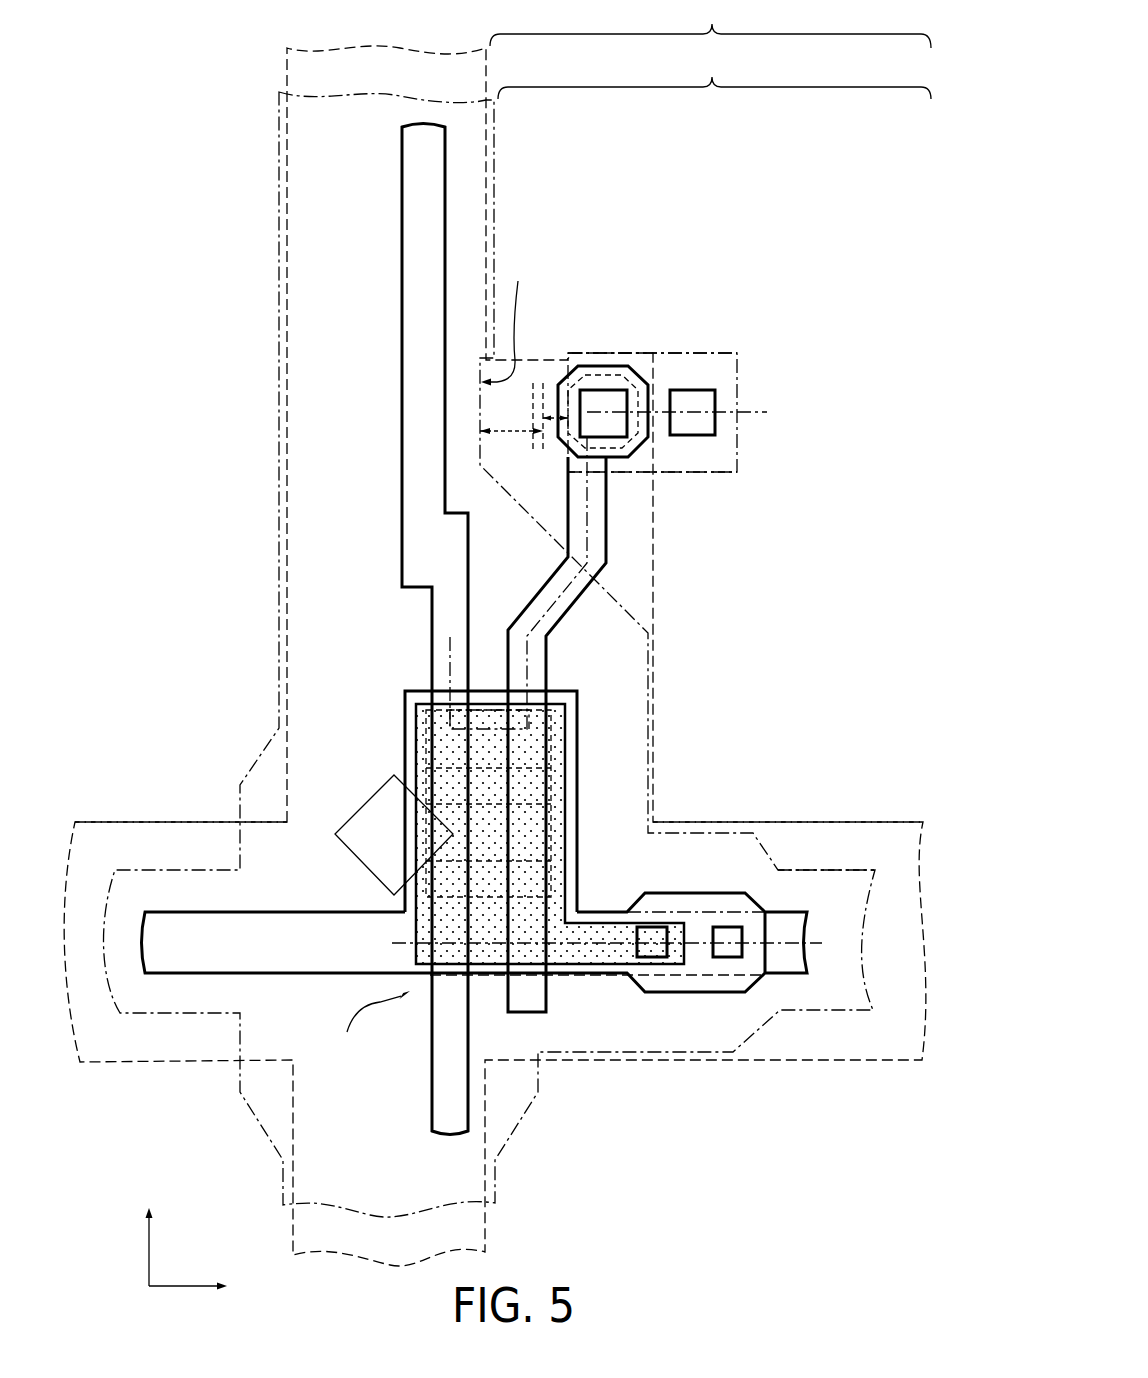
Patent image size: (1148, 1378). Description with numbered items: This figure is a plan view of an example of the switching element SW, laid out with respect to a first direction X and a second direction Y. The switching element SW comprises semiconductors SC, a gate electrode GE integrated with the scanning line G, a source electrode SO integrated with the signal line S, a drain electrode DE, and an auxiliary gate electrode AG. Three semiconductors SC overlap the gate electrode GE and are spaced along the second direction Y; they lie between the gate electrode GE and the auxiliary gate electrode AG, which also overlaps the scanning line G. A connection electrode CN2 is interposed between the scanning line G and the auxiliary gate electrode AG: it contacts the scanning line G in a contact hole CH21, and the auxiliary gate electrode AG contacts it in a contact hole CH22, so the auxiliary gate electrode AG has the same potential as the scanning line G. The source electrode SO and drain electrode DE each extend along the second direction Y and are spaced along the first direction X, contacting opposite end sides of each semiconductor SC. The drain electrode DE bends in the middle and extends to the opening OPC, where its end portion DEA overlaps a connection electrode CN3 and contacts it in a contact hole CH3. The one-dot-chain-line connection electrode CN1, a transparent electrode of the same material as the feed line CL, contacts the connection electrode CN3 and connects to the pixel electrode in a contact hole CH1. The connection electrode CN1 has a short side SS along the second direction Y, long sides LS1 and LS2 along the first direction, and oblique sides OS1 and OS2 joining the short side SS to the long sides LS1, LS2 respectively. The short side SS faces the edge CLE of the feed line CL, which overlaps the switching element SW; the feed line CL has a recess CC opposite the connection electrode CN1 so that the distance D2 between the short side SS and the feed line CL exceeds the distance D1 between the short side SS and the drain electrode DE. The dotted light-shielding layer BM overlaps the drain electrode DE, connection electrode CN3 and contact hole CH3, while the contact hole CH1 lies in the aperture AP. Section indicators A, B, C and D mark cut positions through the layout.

The aperture AP is at (710, 24).
The opening OPC is at (714, 73).
The feed line CL is at (281, 311).
The edge of the feed line CLE is at (505, 207).
The light-shielding layer BM is at (885, 1062).
The recess CC is at (507, 320).
The end portion (short side) SS is at (533, 380).
The oblique side OS1 is at (543, 383).
The oblique side OS2 is at (556, 455).
The signal line S is at (431, 1075).
The end portion of the drain electrode DEA is at (639, 462).
The contact hole CH3 is at (600, 388).
The connection electrode (second connection electrode) CN3 is at (637, 378).
The contact hole CH1 is at (700, 386).
The connection electrode CN1 is at (740, 437).
The long side LS1 is at (701, 353).
The long side LS2 is at (703, 473).
The section line B is at (688, 413).
The distance D1 is at (556, 424).
The distance D2 is at (513, 437).
The drain electrode DE is at (562, 726).
The section line A is at (450, 670).
The gate electrode GE is at (578, 734).
The scanning line G is at (782, 922).
The source electrode SO is at (431, 749).
The semiconductor SC is at (660, 824).
The section line C is at (493, 949).
The section line D is at (725, 943).
The contact hole CH22 is at (657, 957).
The contact hole CH21 is at (730, 957).
The connection electrode CN2 is at (712, 993).
The auxiliary gate electrode AG is at (582, 974).
The switching element SW is at (365, 1027).
The first direction X is at (198, 1286).
The second direction Y is at (149, 1228).